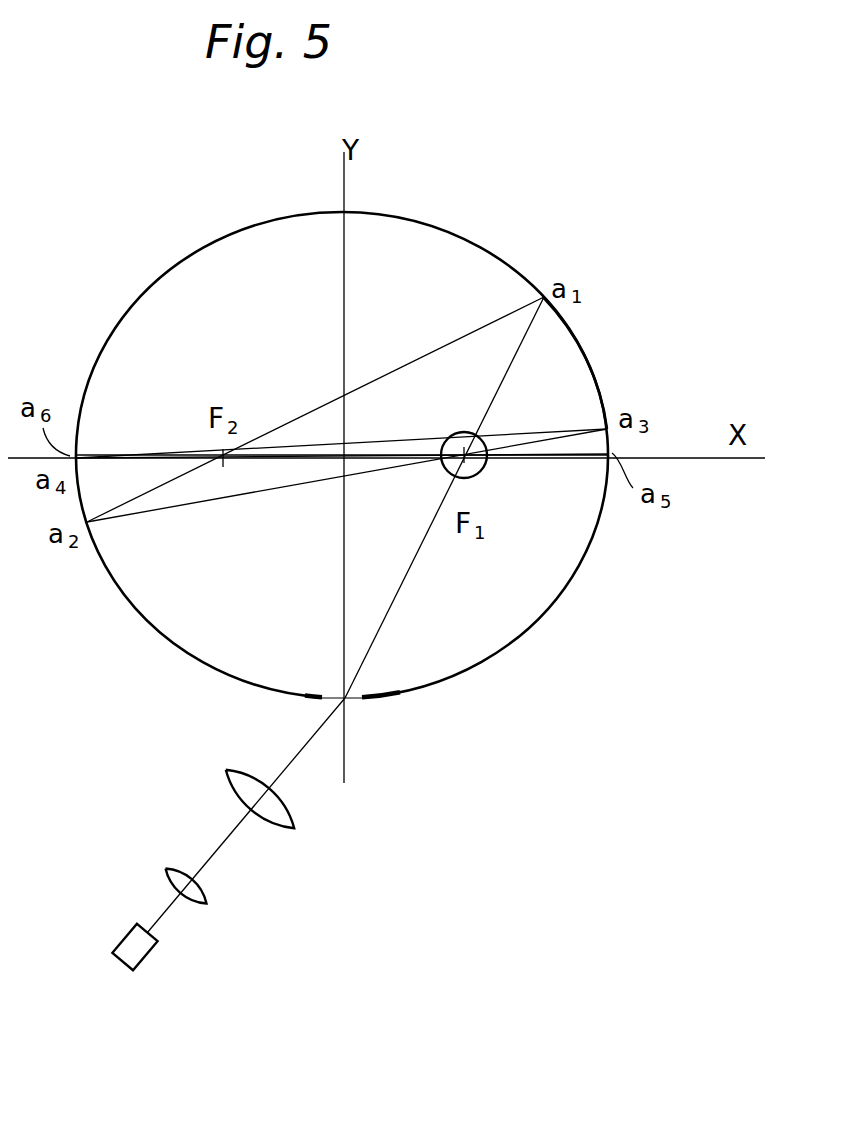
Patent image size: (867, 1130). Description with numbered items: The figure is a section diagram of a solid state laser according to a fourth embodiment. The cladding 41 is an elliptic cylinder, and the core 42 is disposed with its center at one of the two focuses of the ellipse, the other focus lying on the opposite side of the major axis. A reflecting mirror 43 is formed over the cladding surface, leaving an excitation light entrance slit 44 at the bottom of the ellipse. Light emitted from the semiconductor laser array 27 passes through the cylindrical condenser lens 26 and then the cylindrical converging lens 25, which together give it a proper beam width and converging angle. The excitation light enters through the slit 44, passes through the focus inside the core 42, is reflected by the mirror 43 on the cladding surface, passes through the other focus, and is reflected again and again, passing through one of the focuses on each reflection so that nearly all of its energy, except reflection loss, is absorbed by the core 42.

The elliptic cylindrical cladding 41 is at (432, 270).
The core 42 is at (487, 467).
The reflecting mirror 43 is at (593, 367).
The excitation light entrance slit 44 is at (355, 703).
The cylindrical converging lens 25 is at (294, 828).
The cylindrical condenser lens 26 is at (207, 903).
The semiconductor laser array 27 is at (140, 957).